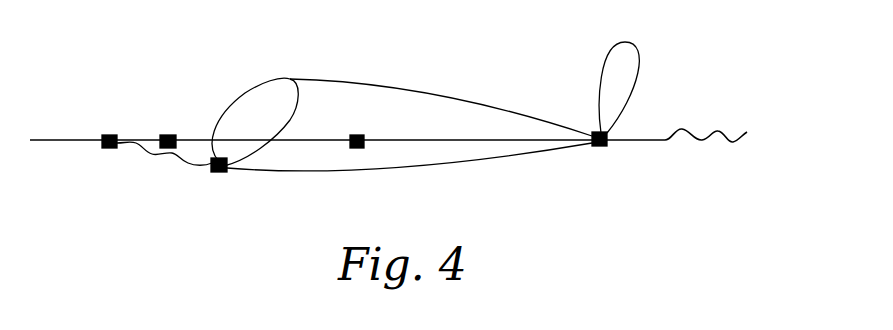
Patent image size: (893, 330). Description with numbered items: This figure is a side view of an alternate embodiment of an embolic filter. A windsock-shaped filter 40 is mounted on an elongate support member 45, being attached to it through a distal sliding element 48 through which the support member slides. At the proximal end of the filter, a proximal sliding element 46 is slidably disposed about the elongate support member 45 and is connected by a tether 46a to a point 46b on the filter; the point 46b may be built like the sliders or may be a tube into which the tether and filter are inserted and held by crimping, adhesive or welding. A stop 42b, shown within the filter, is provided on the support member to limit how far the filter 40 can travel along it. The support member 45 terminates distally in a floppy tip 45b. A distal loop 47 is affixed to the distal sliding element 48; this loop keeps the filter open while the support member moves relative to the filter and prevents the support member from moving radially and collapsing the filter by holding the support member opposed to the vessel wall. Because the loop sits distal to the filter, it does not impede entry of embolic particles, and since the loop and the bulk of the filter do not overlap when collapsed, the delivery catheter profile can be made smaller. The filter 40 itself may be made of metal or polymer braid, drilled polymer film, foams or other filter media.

The windsock-shaped filter 40 is at (397, 88).
The stop 42b is at (168, 135).
The elongate support member 45 is at (80, 140).
The floppy tip 45b is at (717, 131).
The proximal sliding element 46 is at (108, 148).
The tether 46a is at (180, 163).
The point on the filter 46b is at (219, 173).
The distal loop 47 is at (637, 50).
The distal sliding element 48 is at (597, 147).